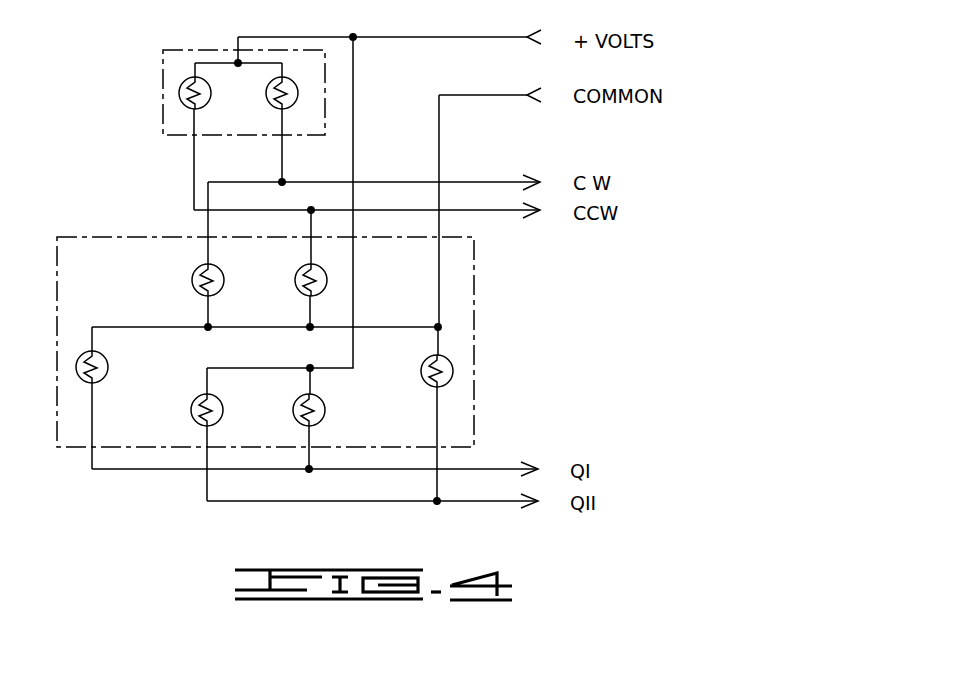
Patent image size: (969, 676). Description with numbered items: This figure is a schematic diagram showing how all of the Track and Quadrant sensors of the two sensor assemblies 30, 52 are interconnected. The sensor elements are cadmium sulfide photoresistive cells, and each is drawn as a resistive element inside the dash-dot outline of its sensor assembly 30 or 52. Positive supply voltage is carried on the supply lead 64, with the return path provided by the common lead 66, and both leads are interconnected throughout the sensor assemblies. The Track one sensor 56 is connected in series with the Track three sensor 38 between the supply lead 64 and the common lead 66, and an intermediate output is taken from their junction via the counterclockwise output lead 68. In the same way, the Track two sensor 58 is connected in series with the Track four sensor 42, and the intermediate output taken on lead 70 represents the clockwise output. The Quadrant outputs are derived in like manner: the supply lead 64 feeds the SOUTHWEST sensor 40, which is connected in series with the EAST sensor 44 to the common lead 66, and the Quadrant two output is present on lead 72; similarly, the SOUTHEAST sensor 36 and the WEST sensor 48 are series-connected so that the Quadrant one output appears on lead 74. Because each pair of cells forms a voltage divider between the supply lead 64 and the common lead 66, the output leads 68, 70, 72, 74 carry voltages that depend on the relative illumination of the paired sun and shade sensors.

The sensor assembly 30 is at (93, 236).
The SOUTHEAST sensor 36 is at (318, 422).
The Track 3 sensor 38 is at (296, 276).
The SOUTHWEST sensor 40 is at (192, 410).
The Track 4 sensor 42 is at (193, 276).
The EAST sensor 44 is at (425, 381).
The WEST sensor 48 is at (103, 379).
The sensor assembly 52 is at (197, 50).
The Track 1 sensor 56 is at (183, 104).
The Track 2 sensor 58 is at (291, 79).
The supply lead 64 is at (483, 37).
The common lead 66 is at (483, 95).
The counterclockwise output lead 68 is at (483, 210).
The clockwise output lead 70 is at (483, 182).
The Quadrant II output lead 72 is at (487, 501).
The Quadrant I output lead 74 is at (487, 469).